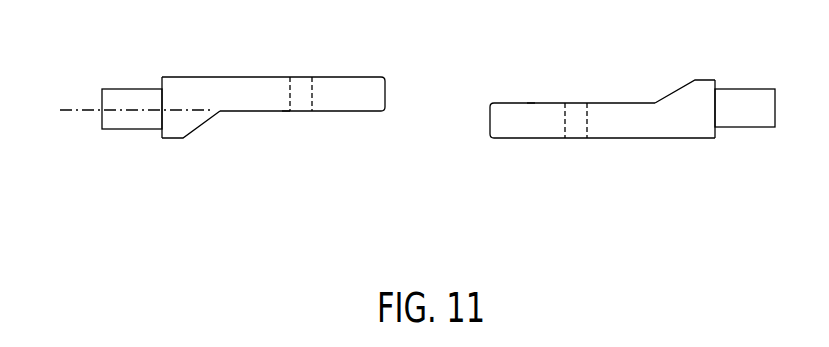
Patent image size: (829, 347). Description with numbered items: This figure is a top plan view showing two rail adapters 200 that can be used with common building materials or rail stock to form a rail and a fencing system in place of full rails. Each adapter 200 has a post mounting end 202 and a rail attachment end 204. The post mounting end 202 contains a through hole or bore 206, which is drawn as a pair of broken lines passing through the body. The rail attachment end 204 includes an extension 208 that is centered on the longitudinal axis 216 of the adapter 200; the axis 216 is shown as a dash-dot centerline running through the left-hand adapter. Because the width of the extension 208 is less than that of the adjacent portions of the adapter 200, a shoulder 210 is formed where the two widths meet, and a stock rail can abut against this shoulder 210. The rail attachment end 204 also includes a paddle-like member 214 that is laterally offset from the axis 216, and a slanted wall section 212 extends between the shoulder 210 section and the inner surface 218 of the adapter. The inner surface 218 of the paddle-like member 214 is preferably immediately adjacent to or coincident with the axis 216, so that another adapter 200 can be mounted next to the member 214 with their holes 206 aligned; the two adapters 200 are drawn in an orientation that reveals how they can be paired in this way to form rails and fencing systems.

The rail adapter 200 is at (260, 130).
The post mounting end 202 is at (365, 130).
The rail attachment end 204 is at (163, 157).
The through hole or bore 206 is at (290, 77).
The extension 208 is at (115, 89).
The shoulder 210 is at (162, 77).
The slanted wall section 212 is at (200, 130).
The paddle-like member 214 is at (352, 77).
The longitudinal axis 216 is at (87, 108).
The inner surface 218 is at (282, 113).